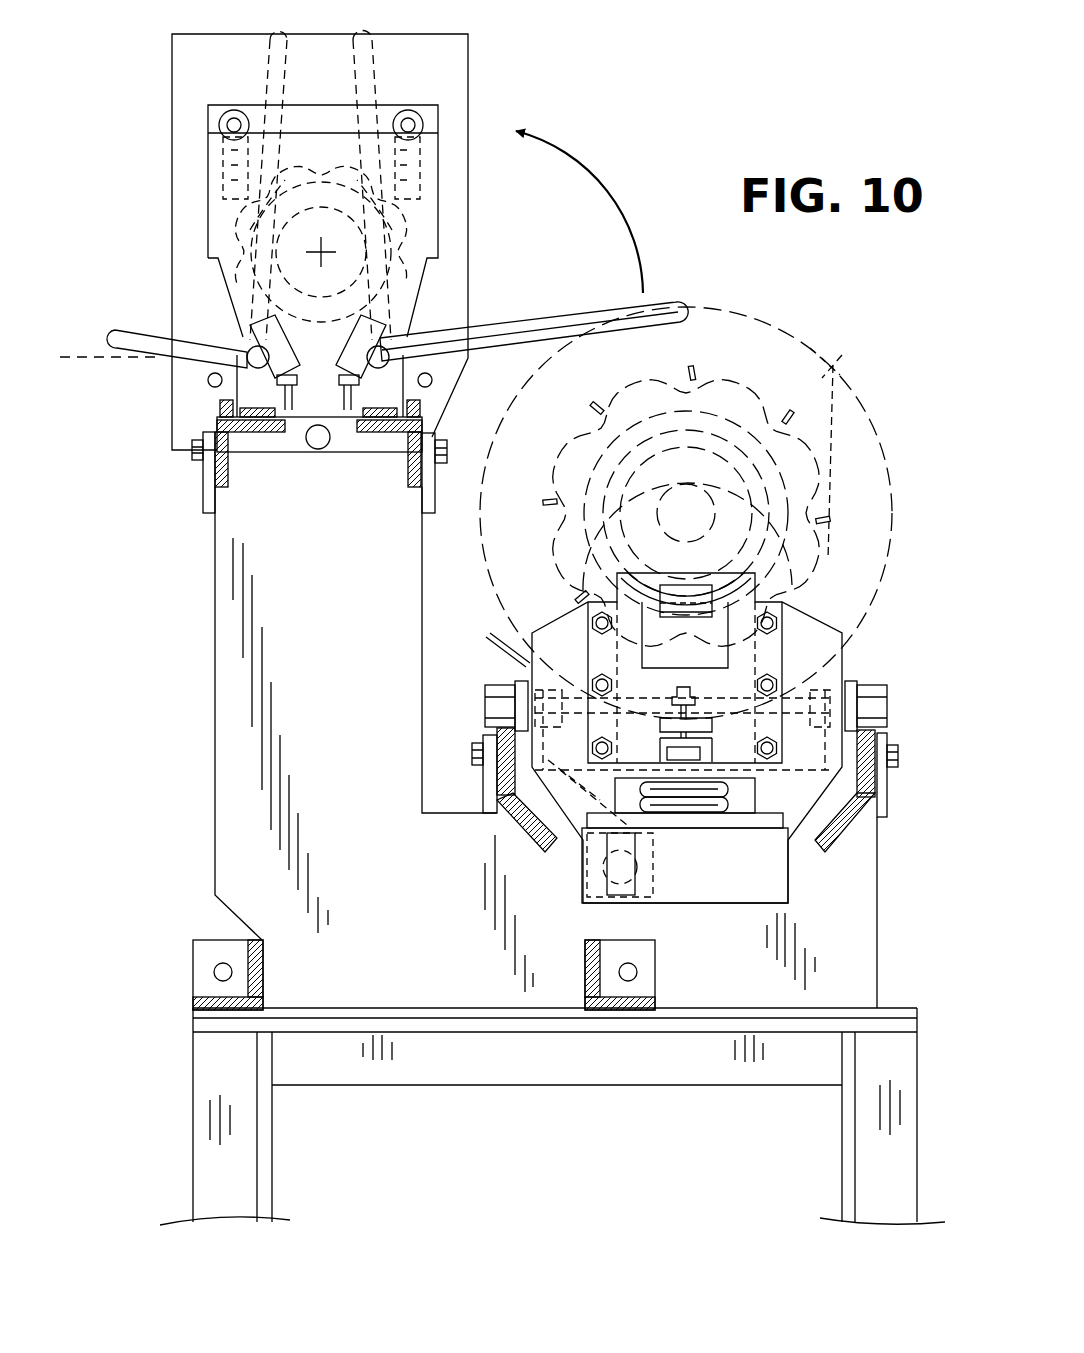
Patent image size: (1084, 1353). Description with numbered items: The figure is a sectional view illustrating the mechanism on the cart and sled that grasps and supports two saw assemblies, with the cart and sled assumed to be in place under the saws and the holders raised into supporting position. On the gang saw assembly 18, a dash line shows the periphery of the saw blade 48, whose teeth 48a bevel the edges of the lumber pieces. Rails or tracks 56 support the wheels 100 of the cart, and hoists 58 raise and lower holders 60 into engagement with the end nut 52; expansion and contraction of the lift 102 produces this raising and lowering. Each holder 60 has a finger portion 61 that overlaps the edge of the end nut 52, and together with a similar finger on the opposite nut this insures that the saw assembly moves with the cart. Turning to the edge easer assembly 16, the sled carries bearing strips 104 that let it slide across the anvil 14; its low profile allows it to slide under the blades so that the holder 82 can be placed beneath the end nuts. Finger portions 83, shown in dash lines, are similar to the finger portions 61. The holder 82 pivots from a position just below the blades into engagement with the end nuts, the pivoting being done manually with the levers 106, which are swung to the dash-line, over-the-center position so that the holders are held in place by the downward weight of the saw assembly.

The anvil 14 is at (83, 357).
The edge easer assembly 16 is at (477, 301).
The gang saw assembly 18 is at (865, 634).
The saw blade 48 is at (763, 305).
The teeth 48a is at (833, 362).
The end nut 52 is at (598, 592).
The rails or tracks 56 is at (500, 748).
The hoists 58 is at (745, 835).
The holders 60 is at (592, 574).
The finger portion 61 is at (665, 607).
The holder 82 is at (247, 333).
The finger portions 83 is at (404, 332).
The wheels 100 is at (492, 698).
The lift 102 is at (690, 795).
The bearing strips 104 is at (372, 432).
The levers 106 is at (263, 73).